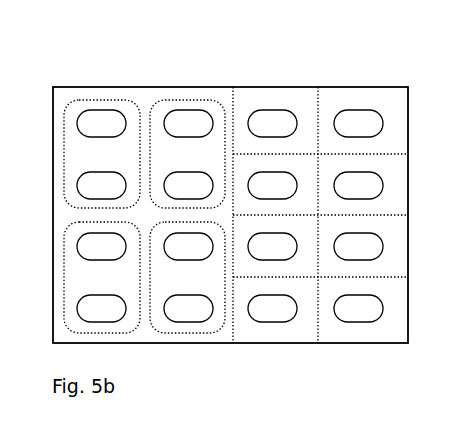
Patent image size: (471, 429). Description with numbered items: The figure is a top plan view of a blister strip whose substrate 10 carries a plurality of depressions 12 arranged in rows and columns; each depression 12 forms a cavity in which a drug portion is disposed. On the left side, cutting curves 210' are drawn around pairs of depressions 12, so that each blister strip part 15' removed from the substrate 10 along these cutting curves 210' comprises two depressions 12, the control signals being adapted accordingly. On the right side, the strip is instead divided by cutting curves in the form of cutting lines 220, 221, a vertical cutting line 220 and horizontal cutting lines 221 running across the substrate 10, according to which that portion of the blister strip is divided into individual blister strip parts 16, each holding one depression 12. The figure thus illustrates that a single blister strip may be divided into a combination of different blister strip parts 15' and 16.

The substrate 10 is at (58, 95).
The cutting curves 210' is at (102, 120).
The depressions 12 is at (102, 123).
The blister strip part 15' is at (187, 309).
The cutting line 220 is at (320, 112).
The cutting line 221 is at (387, 153).
The blister strip parts 16 is at (296, 332).